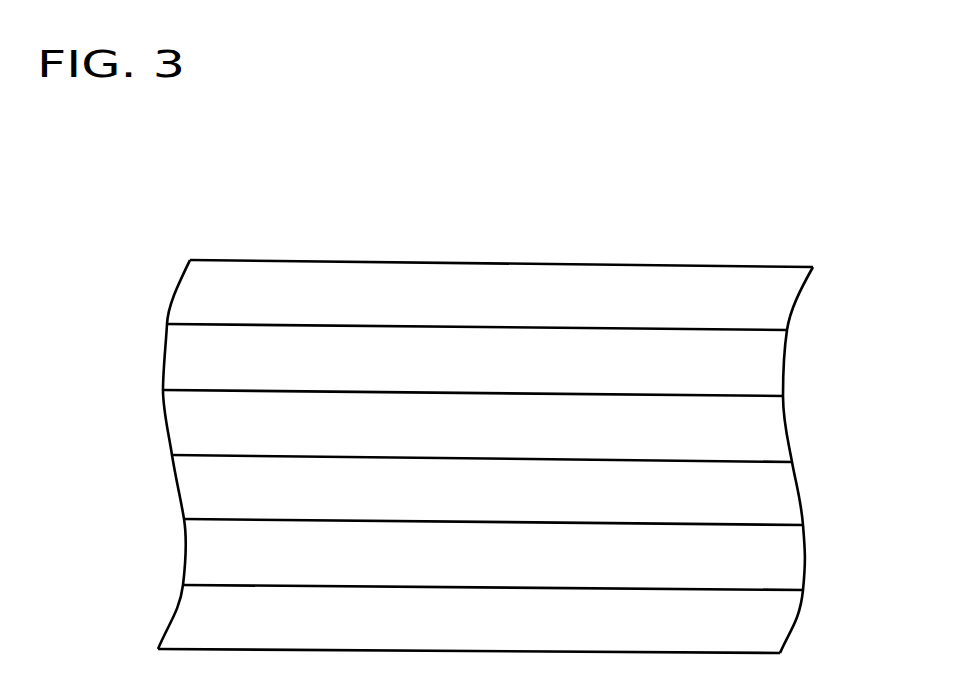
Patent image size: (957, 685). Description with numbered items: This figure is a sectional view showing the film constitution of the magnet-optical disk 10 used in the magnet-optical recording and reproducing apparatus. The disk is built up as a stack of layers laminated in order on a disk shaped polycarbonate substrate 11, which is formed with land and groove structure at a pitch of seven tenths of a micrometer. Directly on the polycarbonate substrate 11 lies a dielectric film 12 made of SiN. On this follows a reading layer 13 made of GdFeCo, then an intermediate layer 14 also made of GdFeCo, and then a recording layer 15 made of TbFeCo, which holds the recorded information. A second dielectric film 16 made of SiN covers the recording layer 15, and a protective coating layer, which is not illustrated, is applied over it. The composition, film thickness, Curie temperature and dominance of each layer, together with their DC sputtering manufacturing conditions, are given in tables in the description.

The magnet-optical disk 10 is at (736, 219).
The polycarbonate substrate 11 is at (202, 293).
The dielectric film 12 is at (202, 358).
The reading layer 13 is at (202, 424).
The intermediate layer 14 is at (202, 489).
The recording layer 15 is at (202, 554).
The dielectric film 16 is at (202, 619).